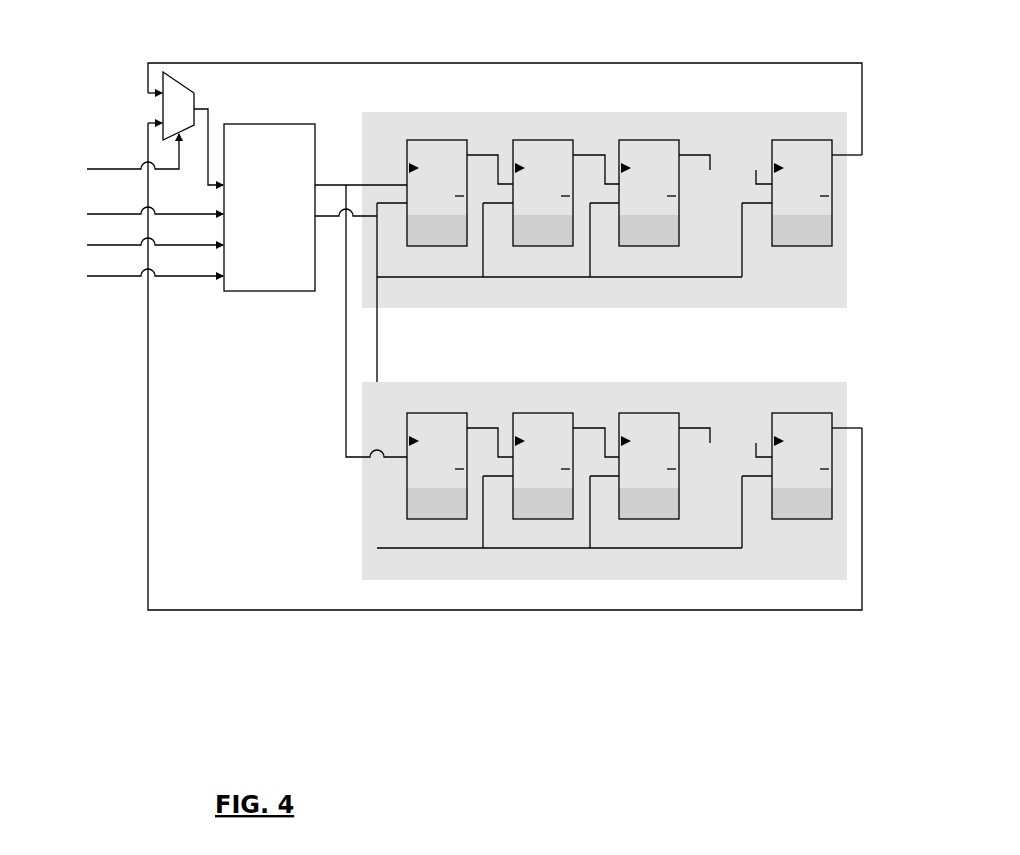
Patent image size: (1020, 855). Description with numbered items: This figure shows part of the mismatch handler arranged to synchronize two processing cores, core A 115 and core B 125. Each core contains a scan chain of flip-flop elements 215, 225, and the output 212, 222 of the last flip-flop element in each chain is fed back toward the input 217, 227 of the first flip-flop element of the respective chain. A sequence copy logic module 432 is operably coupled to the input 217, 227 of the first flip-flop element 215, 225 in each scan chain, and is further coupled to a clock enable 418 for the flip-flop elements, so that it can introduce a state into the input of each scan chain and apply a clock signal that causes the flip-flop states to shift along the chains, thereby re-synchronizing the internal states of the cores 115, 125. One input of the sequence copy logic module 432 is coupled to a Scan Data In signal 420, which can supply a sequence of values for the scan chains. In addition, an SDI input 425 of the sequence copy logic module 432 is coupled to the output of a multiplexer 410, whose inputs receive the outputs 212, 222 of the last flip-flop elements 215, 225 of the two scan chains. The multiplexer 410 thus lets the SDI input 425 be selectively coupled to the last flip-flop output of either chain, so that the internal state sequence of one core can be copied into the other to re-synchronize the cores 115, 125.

The processing core A 115 is at (588, 205).
The processing core B 125 is at (604, 382).
The output of the last flip-flop element in core A scan chain 212 is at (620, 63).
The flip-flop elements of core A 215 is at (625, 140).
The input of the first flip-flop element in core A scan chain 217 is at (407, 183).
The output of the last flip-flop element in core B scan chain 222 is at (620, 612).
The flip-flop elements of core B 225 is at (625, 413).
The input of the first flip-flop element in core B scan chain 227 is at (392, 457).
The multiplexer 410 is at (178, 110).
The clock enable 418 is at (377, 322).
The Scan Data In signal 420 is at (87, 203).
The SDI input of the sequence copy logic module 425 is at (207, 156).
The sequence copy logic module 432 is at (270, 292).